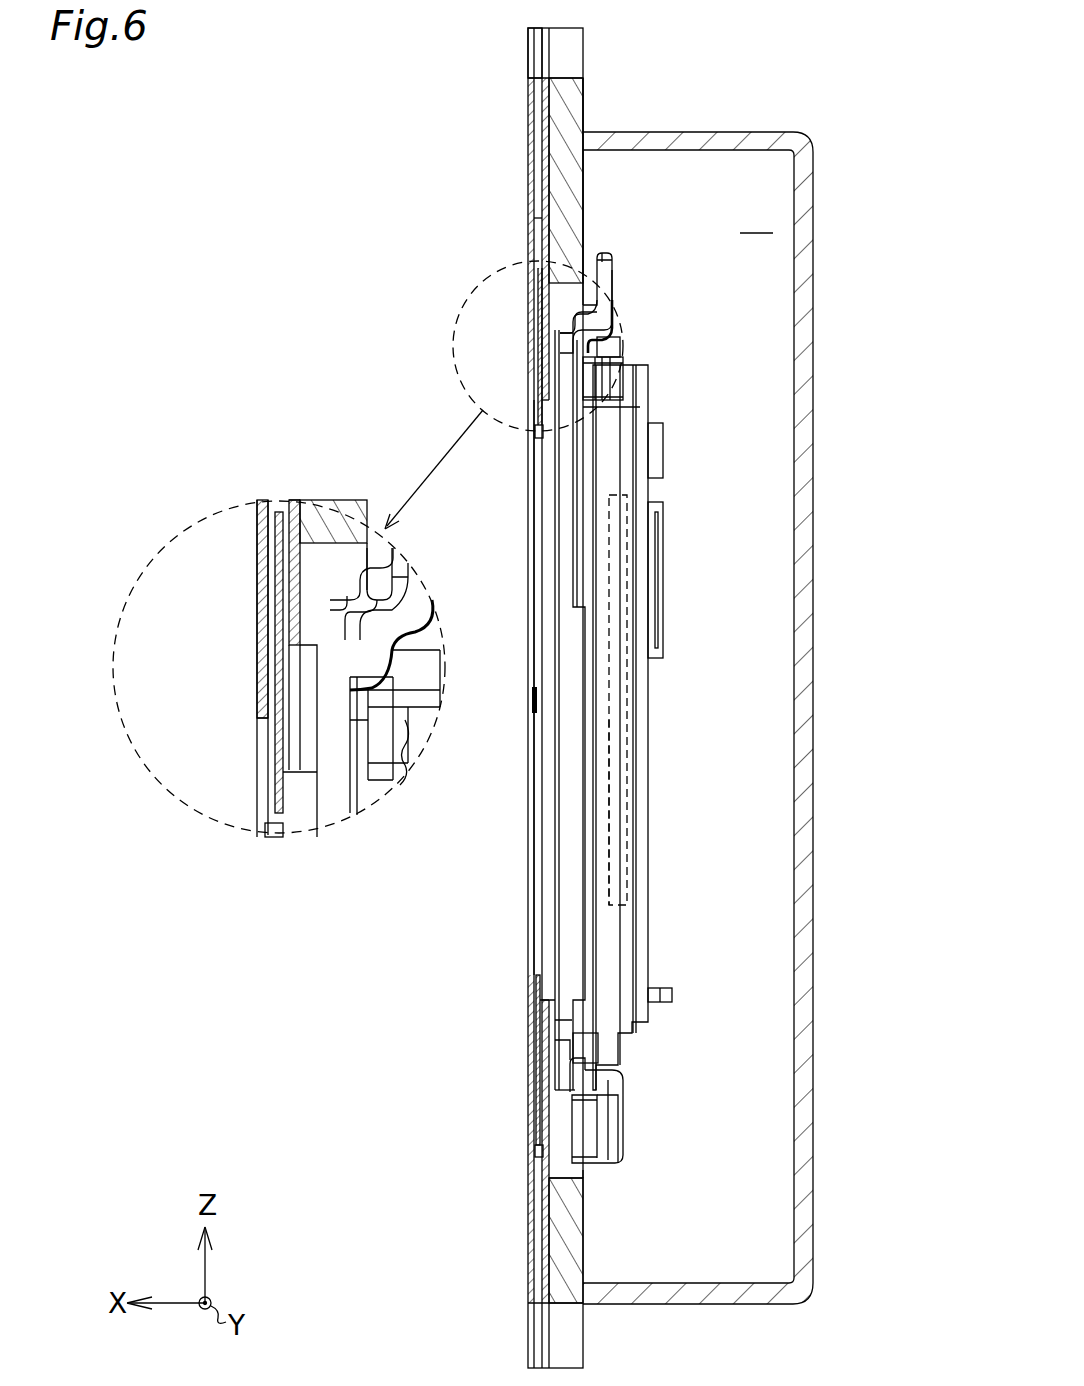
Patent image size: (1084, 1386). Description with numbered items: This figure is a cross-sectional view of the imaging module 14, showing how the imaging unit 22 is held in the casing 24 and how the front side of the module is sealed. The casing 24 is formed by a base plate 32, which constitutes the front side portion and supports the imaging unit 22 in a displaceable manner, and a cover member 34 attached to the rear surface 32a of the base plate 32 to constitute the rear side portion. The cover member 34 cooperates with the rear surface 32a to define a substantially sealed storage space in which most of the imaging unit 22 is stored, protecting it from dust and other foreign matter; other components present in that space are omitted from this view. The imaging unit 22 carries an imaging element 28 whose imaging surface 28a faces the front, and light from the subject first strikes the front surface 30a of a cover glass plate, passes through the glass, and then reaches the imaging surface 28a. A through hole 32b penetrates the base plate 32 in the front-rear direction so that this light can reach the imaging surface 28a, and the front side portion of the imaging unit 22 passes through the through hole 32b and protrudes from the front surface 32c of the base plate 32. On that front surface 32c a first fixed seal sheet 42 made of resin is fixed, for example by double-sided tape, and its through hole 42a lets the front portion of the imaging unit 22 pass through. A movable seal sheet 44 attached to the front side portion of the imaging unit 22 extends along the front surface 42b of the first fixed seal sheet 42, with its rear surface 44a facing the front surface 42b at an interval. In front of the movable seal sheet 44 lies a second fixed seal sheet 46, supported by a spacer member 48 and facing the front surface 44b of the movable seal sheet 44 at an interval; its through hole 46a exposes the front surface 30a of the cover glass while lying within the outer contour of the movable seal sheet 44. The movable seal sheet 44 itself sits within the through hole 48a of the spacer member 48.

The imaging module 14 is at (325, 157).
The imaging unit 22 is at (640, 418).
The casing 24 is at (709, 669).
The imaging element 28 is at (620, 700).
The imaging surface 28a is at (598, 722).
The front surface of the cover glass plate 30a is at (528, 580).
The base plate 32 is at (568, 1228).
The rear surface of the base plate 32a is at (585, 198).
The through hole 32b is at (575, 1170).
The front surface of the base plate 32c is at (530, 1200).
The cover member 34 is at (697, 132).
The first fixed seal sheet 42 is at (538, 1135).
The through hole of the first fixed seal sheet 42a is at (545, 1038).
The front surface of the first fixed seal sheet 42b is at (255, 520).
The movable seal sheet 44 is at (533, 1008).
The rear surface of the movable seal sheet 44a is at (283, 760).
The front surface of the movable seal sheet 44b is at (270, 697).
The second fixed seal sheet 46 is at (528, 128).
The through hole of the second fixed seal sheet 46a is at (528, 845).
The spacer member 48 is at (535, 92).
The through hole of the spacer member 48a is at (538, 232).